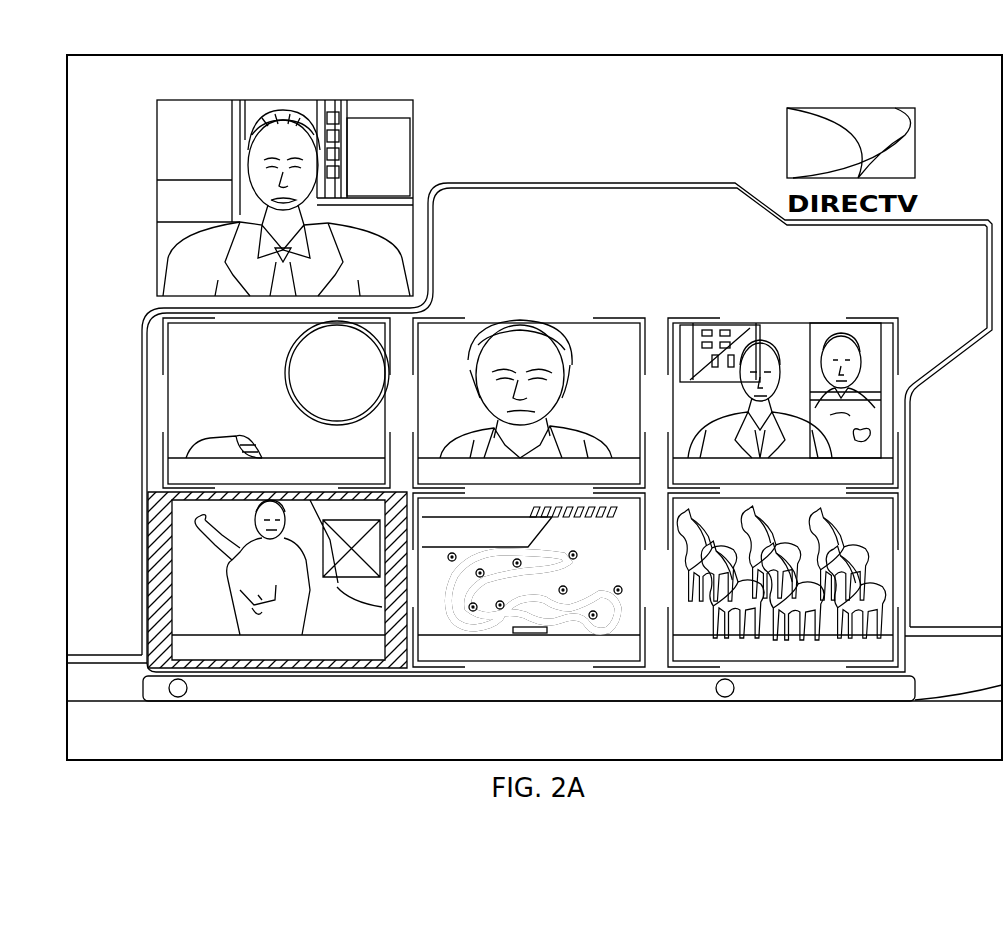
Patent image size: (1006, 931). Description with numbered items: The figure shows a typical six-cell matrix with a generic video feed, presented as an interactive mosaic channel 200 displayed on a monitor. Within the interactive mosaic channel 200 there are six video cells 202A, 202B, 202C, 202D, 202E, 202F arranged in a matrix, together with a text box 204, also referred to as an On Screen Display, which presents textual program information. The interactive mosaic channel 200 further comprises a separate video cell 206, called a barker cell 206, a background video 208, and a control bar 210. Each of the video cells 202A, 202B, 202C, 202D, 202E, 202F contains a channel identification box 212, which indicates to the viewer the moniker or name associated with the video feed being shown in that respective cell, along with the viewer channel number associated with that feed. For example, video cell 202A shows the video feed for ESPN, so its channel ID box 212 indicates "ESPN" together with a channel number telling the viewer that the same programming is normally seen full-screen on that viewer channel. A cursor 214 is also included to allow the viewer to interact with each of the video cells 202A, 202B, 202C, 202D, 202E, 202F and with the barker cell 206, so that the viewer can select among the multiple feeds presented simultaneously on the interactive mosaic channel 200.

The interactive mosaic channel 200 is at (548, 48).
The video cell 202A is at (230, 403).
The video cell 202B is at (620, 332).
The video cell 202C is at (873, 425).
The video cell 202D is at (239, 580).
The video cell 202E is at (610, 607).
The video cell 202F is at (870, 581).
The text box 204 is at (693, 203).
The barker cell 206 is at (190, 118).
The background video 208 is at (621, 118).
The control bar 210 is at (153, 688).
The channel identification box 212 is at (172, 470).
The cursor 214 is at (158, 533).